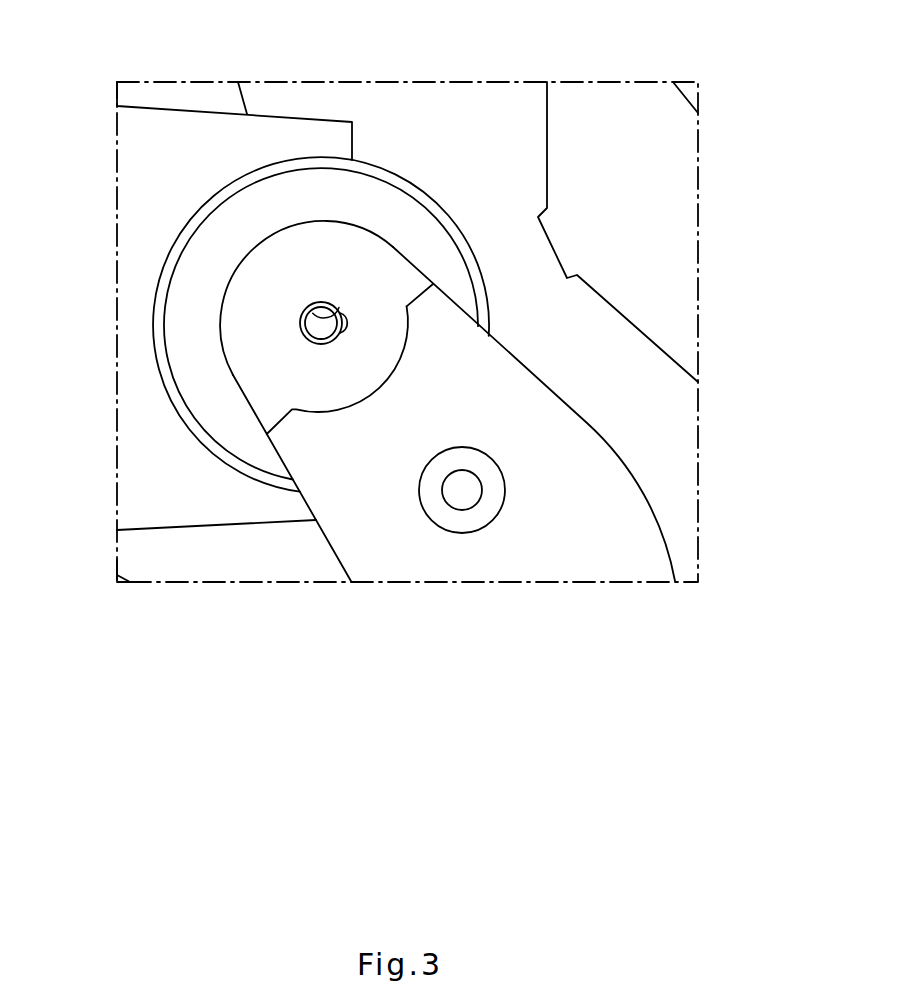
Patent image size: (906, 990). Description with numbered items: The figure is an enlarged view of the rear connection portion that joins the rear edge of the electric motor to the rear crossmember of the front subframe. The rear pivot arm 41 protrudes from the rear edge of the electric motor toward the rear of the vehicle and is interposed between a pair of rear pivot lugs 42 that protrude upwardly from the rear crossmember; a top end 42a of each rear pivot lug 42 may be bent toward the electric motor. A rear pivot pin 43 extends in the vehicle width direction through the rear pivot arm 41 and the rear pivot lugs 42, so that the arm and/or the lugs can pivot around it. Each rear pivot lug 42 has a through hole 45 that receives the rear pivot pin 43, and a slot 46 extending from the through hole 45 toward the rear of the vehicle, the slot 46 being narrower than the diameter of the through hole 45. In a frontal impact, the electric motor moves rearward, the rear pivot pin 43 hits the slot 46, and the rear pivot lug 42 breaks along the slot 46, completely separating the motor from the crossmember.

The rear pivot arm 41 is at (182, 500).
The rear pivot lug 42 is at (592, 532).
The top end 42a is at (513, 403).
The rear pivot pin 43 is at (321, 323).
The through hole 45 is at (340, 305).
The slot 46 is at (342, 324).